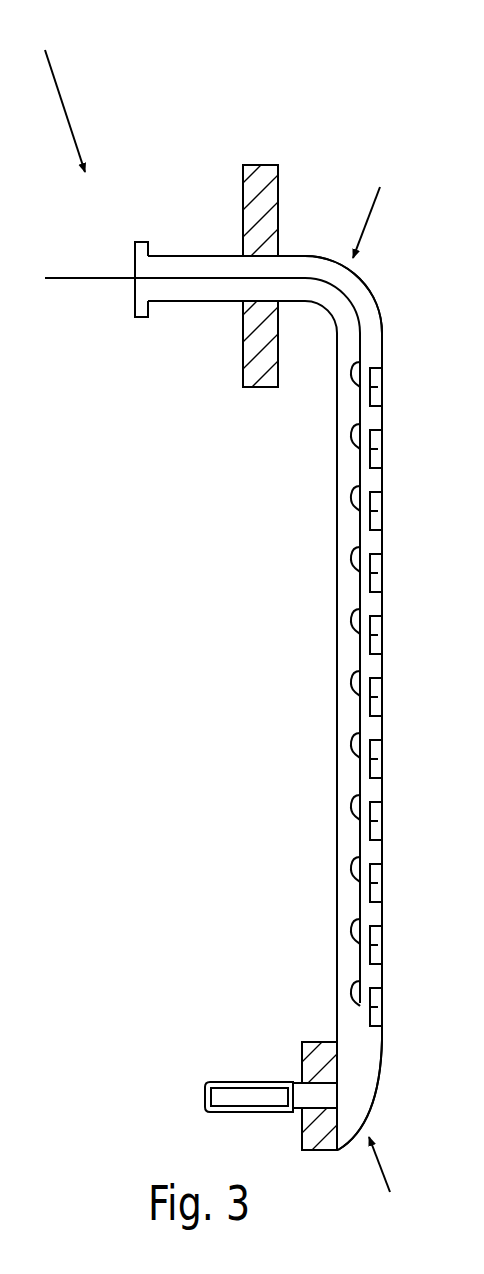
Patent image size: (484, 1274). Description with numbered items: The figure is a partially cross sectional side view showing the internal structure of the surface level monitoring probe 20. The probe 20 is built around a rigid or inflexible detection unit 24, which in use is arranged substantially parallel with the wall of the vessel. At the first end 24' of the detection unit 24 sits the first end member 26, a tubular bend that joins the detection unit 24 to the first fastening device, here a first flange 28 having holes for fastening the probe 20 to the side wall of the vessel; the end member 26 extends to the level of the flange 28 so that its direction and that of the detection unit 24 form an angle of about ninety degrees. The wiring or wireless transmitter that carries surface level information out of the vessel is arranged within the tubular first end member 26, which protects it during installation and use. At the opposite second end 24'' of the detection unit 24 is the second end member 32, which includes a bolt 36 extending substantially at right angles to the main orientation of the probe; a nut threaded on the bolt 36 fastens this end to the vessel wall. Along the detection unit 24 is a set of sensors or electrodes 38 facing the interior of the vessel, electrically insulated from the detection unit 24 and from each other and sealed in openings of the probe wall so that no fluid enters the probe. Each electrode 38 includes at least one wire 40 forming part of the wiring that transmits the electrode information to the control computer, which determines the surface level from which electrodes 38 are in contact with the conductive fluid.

The surface level monitoring probe 20 is at (56, 89).
The detection unit 24 is at (213, 696).
The first end of the detection unit 24' is at (357, 236).
The second end of the detection unit 24'' is at (378, 1139).
The first end member 26 is at (228, 270).
The first flange 28 is at (257, 192).
The second end member 32 is at (357, 1080).
The bolt 36 is at (315, 1093).
The sensors or electrodes 38 is at (378, 389).
The wire 40 is at (357, 617).